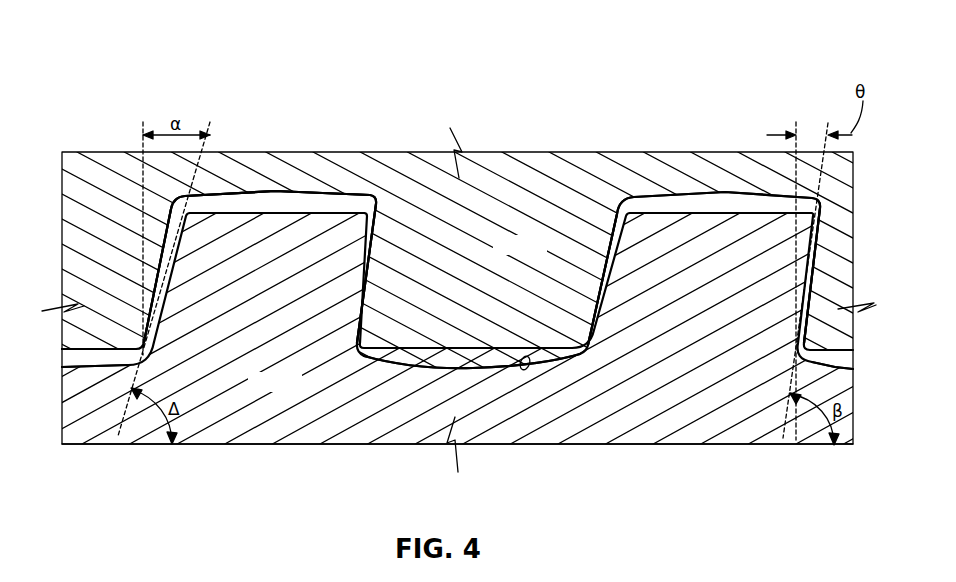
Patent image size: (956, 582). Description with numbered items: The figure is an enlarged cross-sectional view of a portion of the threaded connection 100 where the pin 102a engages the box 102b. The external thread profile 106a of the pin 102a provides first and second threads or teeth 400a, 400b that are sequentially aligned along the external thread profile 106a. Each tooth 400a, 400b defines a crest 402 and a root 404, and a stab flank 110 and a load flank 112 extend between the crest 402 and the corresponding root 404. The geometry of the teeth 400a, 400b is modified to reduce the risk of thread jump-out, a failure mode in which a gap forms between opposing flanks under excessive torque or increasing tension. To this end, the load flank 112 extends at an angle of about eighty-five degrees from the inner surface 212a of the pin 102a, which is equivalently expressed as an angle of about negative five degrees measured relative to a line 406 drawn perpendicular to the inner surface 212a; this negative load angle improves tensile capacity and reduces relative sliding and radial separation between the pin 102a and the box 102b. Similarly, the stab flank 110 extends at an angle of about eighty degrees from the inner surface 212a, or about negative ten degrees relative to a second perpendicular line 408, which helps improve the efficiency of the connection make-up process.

The threaded connection 100 is at (168, 30).
The pin 102a is at (300, 391).
The box 102b is at (545, 254).
The external thread profile 106a is at (351, 202).
The stab flank 110 is at (150, 278).
The load flank 112 is at (370, 265).
The inner surface 212a is at (727, 444).
The first tooth 400a is at (262, 235).
The second tooth 400b is at (690, 235).
The crest 402 is at (227, 212).
The root 404 is at (522, 370).
The line perpendicular to the inner surface 406 is at (795, 124).
The line perpendicular to the inner surface 408 is at (140, 203).